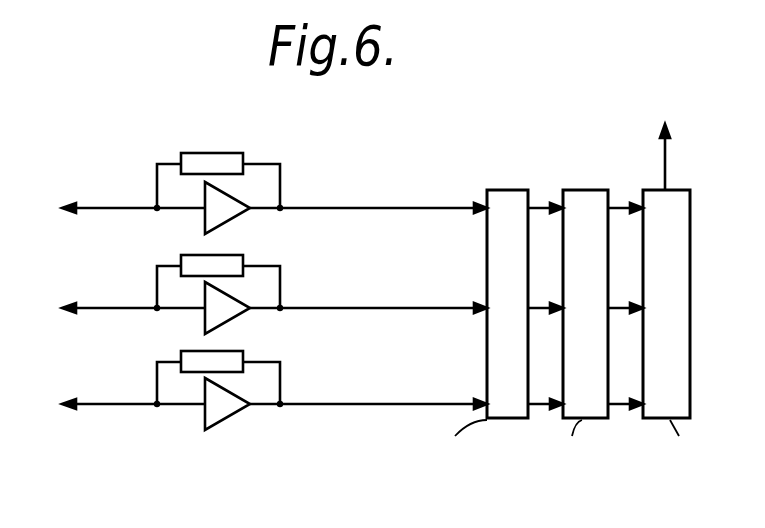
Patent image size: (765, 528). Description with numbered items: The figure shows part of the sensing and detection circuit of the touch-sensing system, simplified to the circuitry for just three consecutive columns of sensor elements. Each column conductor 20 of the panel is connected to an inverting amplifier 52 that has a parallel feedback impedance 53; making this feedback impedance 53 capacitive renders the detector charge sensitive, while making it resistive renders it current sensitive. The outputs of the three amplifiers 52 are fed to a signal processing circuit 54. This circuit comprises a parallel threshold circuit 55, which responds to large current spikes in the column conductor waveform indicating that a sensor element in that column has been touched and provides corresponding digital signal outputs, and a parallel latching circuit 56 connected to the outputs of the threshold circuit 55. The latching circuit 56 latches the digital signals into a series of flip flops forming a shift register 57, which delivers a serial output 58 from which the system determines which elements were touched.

The column conductor 20 is at (94, 306).
The inverting amplifier 52 is at (233, 211).
The parallel feedback impedance 53 is at (211, 156).
The signal processing circuit 54 is at (547, 163).
The parallel threshold circuit 55 is at (494, 323).
The parallel latching circuit 56 is at (573, 323).
The shift register 57 is at (654, 323).
The serial output 58 is at (680, 153).